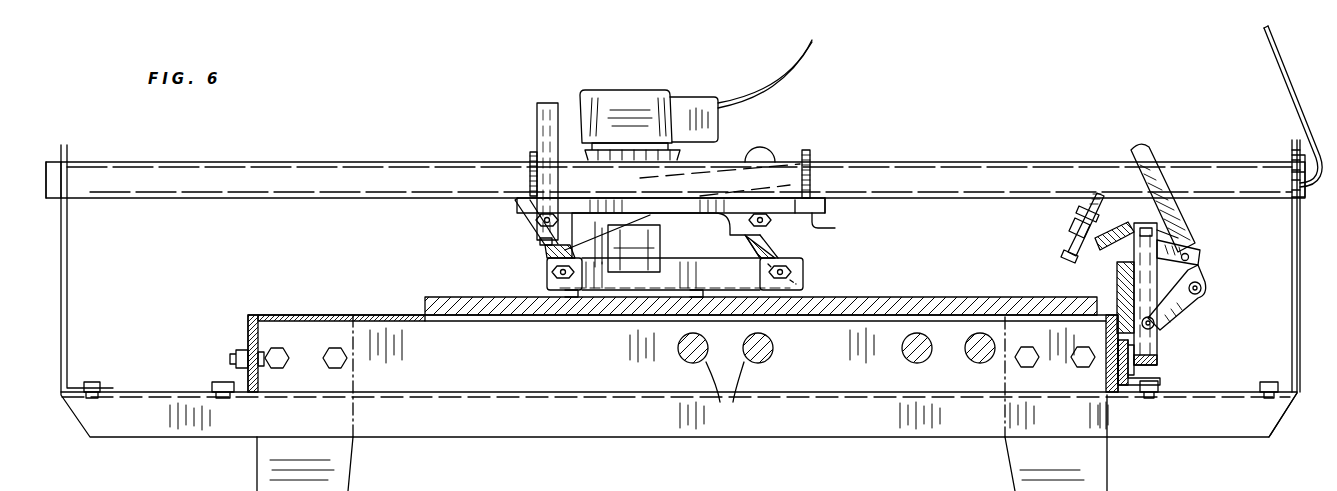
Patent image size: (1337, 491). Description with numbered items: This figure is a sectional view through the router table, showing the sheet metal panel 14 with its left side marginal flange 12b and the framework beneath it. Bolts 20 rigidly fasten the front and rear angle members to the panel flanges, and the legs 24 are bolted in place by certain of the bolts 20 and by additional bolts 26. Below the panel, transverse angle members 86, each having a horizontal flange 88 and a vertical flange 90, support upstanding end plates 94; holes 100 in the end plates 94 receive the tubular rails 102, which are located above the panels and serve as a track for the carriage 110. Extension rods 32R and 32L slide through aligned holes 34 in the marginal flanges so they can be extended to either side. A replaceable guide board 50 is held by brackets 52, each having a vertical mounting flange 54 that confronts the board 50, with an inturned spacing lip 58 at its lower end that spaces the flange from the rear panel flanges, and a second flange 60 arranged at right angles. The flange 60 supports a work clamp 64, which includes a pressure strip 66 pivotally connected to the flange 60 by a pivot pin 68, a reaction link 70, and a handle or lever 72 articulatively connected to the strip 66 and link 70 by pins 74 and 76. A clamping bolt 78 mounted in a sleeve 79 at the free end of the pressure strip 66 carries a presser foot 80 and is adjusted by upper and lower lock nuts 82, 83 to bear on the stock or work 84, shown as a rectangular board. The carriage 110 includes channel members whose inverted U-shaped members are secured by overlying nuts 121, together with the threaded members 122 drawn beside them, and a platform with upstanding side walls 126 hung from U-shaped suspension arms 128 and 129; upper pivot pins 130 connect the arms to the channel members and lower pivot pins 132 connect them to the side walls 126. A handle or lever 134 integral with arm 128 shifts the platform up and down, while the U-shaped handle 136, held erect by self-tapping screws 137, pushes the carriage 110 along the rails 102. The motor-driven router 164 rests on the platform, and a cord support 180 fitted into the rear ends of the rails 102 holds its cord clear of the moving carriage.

The left side marginal flange 12b is at (458, 372).
The sheet metal panel 14 is at (370, 313).
The bolts 20 is at (240, 352).
The legs 24 is at (262, 481).
The additional bolts 26 is at (332, 348).
The extension rod 32R is at (688, 352).
The extension rod 32L is at (775, 350).
The holes 34 is at (725, 393).
The replaceable guide board 50 is at (1118, 290).
The brackets 52 is at (1160, 360).
The vertical mounting flange 54 is at (1150, 342).
The inturned spacing lip 58 is at (1125, 387).
The supporting flange 60 is at (1140, 225).
The work clamp 64 is at (1130, 287).
The pressure strip 66 is at (1110, 246).
The pivot pin 68 is at (1152, 240).
The reaction link 70 is at (1168, 312).
The handle or lever 72 is at (1152, 148).
The pin 74 is at (1202, 290).
The pin 76 is at (1196, 258).
The clamping bolt 78 is at (1068, 240).
The sleeve 79 is at (1082, 222).
The presser foot 80 is at (1066, 254).
The upper lock nut 82 is at (1097, 212).
The lower lock nut 83 is at (1078, 230).
The stock or work 84 is at (463, 294).
The transverse angle members 86 is at (715, 438).
The horizontal flange 88 is at (423, 398).
The vertical flange 90 is at (945, 420).
The end plates 94 is at (1297, 340).
The holes 100 is at (1292, 157).
The tubular rails 102 is at (339, 160).
The carriage 110 is at (670, 211).
The overlying nuts 121 is at (520, 197).
The threaded rods 122 is at (530, 153).
The upstanding side walls 126 is at (733, 270).
The U-shaped suspension arm 128 is at (544, 272).
The U-shaped suspension arm 129 is at (797, 243).
The upper pivot pins 130 is at (538, 222).
The lower pivot pins 132 is at (705, 310).
The handle or lever 134 is at (762, 158).
The U-shaped handle 136 is at (552, 103).
The self-tapping screw 137 is at (540, 240).
The motor-driven router 164 is at (645, 88).
The cord support 180 is at (805, 490).